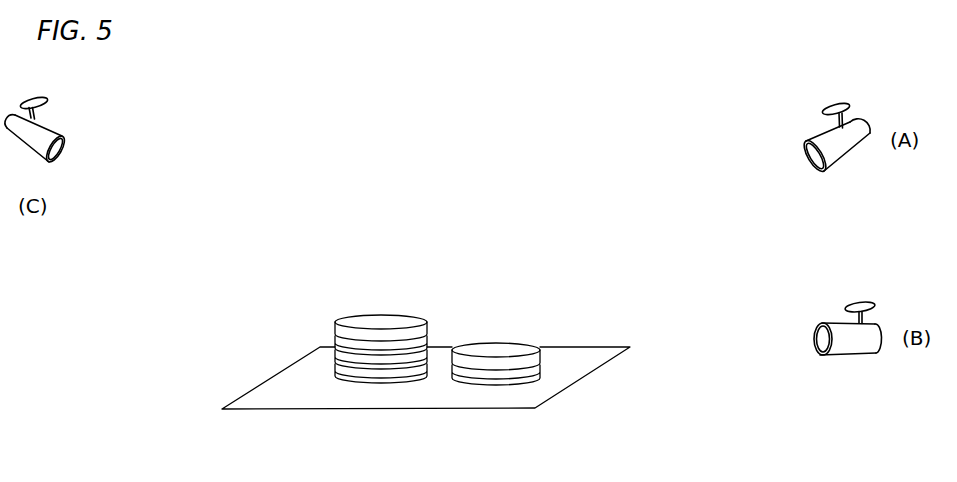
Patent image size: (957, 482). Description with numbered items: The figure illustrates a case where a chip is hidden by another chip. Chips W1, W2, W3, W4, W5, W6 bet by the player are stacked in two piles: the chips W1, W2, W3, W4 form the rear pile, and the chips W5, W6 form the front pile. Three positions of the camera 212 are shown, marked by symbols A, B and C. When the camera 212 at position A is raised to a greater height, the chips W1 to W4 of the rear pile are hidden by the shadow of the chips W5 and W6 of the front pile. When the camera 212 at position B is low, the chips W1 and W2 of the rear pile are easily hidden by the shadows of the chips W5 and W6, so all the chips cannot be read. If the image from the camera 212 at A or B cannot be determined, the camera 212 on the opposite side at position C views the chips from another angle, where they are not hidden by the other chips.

The camera 212 is at (48, 124).
The chip W1 is at (336, 373).
The chip W2 is at (336, 361).
The chip W3 is at (336, 346).
The chip W4 is at (336, 326).
The chip W5 is at (541, 371).
The chip W6 is at (541, 356).